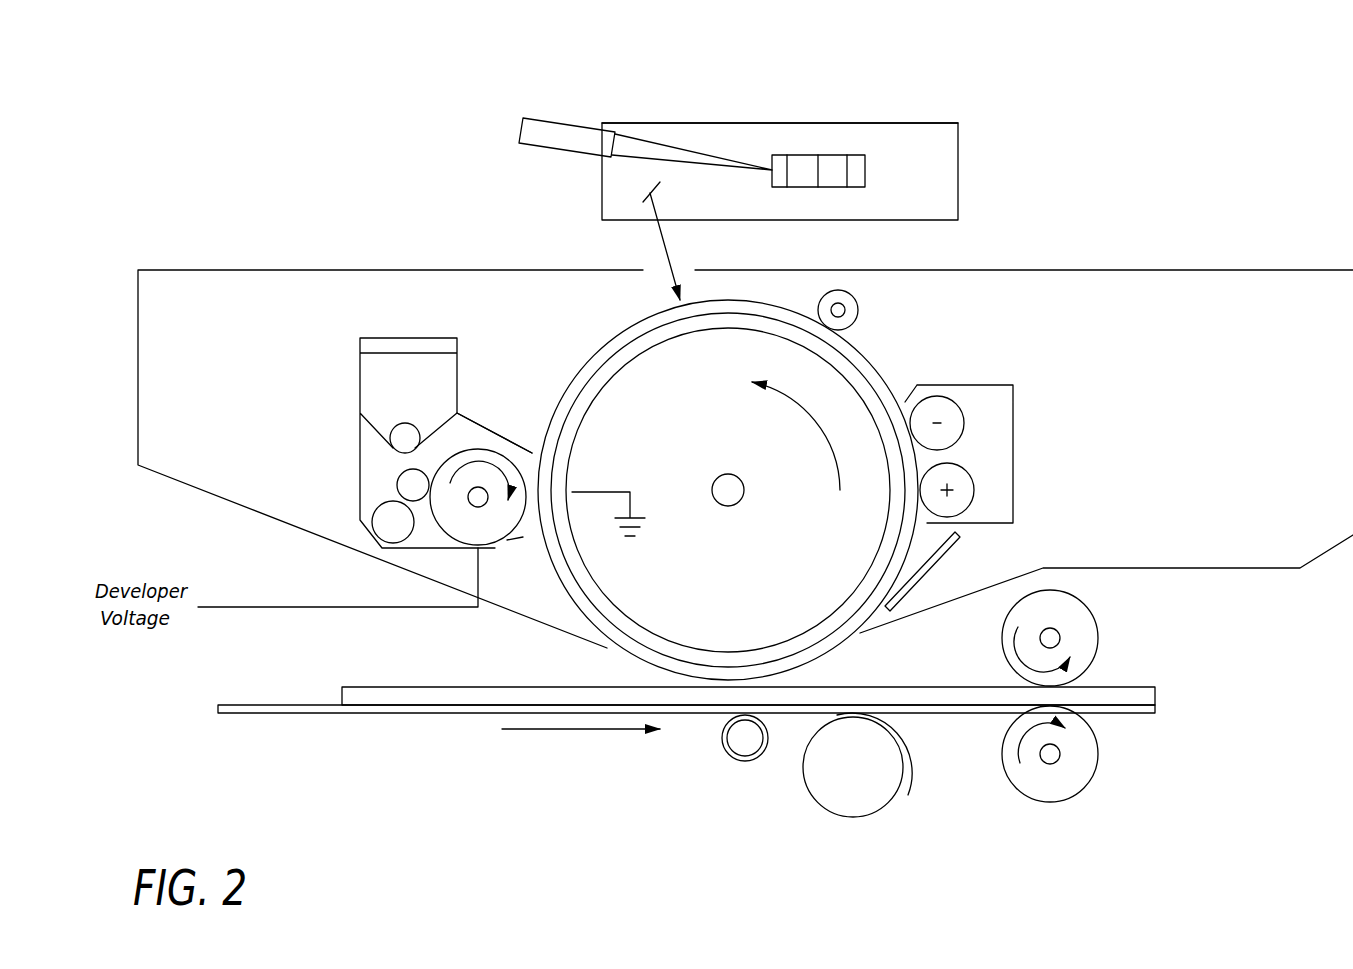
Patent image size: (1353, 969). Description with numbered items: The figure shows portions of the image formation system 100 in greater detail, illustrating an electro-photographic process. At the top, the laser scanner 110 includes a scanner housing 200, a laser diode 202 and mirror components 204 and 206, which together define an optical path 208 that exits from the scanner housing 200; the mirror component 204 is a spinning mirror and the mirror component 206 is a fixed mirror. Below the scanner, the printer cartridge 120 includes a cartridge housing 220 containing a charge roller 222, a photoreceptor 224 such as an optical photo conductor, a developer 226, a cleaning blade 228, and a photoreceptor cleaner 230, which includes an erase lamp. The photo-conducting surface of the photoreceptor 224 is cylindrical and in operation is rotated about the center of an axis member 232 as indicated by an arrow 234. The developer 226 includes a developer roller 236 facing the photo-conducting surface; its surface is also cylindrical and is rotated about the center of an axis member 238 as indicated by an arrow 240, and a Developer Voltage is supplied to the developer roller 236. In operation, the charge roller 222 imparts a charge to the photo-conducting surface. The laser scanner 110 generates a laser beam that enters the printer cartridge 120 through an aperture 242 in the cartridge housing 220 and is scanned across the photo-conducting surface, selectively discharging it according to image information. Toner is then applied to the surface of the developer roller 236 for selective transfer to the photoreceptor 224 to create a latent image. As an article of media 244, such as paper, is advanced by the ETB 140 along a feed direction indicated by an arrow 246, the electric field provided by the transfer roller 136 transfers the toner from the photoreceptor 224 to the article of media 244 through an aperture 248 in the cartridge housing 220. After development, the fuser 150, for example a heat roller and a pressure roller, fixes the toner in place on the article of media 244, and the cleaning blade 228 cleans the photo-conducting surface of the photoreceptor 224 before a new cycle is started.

The image formation system 100 is at (285, 147).
The laser scanner 110 is at (903, 120).
The printer cartridge 120 is at (1220, 220).
The transfer roller 136 is at (745, 762).
The ETB 140 is at (280, 714).
The fuser 150 is at (1132, 638).
The scanner housing 200 is at (665, 122).
The laser diode 202 is at (570, 125).
The mirror component 204 is at (865, 168).
The mirror component 206 is at (643, 187).
The optical path 208 is at (663, 240).
The cartridge housing 220 is at (1023, 270).
The charge roller 222 is at (860, 318).
The photoreceptor 224 is at (608, 343).
The developer 226 is at (360, 382).
The cleaning blade 228 is at (962, 555).
The photoreceptor cleaner 230 is at (1013, 410).
The axis member 232 is at (737, 506).
The arrow 234 is at (793, 405).
The developer roller 236 is at (457, 447).
The axis member 238 is at (478, 500).
The arrow 240 is at (497, 470).
The aperture 242 is at (680, 272).
The article of media 244 is at (409, 687).
The arrow 246 is at (550, 730).
The aperture 248 is at (862, 633).